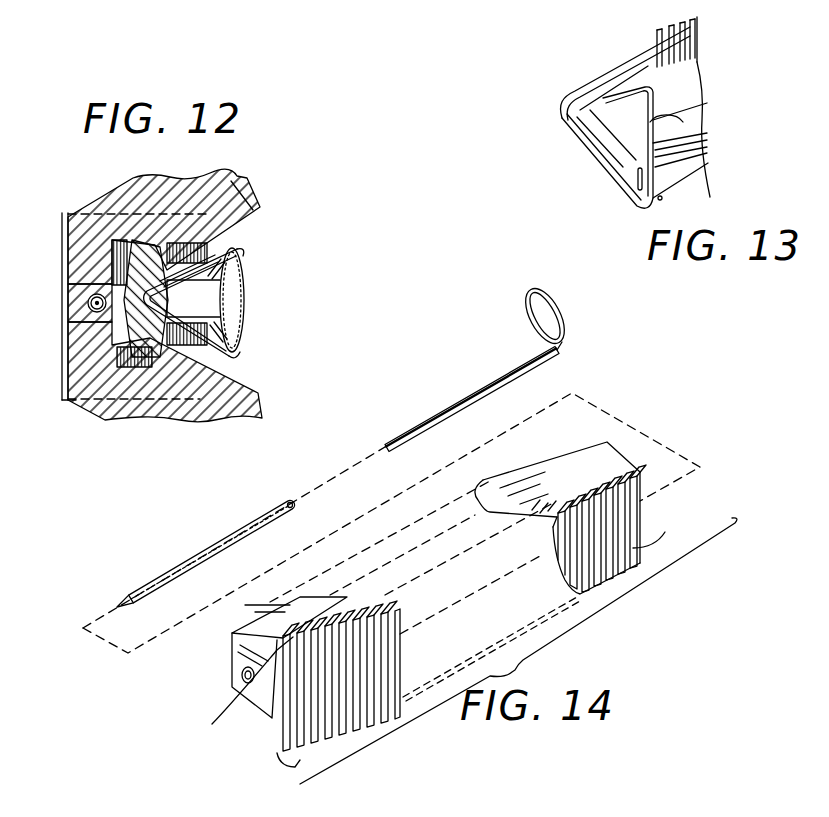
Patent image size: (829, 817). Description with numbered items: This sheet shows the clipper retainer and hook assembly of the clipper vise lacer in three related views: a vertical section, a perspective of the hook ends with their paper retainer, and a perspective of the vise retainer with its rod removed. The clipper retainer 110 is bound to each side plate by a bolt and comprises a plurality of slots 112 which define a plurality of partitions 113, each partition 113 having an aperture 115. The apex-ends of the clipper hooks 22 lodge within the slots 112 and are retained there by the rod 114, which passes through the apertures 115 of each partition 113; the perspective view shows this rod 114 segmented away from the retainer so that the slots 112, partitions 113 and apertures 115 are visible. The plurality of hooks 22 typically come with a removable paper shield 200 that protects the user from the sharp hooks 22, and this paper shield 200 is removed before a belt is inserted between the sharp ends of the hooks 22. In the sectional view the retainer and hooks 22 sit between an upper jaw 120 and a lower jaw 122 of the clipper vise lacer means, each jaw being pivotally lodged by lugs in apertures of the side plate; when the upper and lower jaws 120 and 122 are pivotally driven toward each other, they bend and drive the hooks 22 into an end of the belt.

In FIG. 12, the clipper hooks 22 is at (237, 250).
In FIG. 13, the clipper hooks 22 is at (683, 70).
In FIG. 12, the clipper retainer 110 is at (82, 310).
In FIG. 14, the clipper retainer 110 is at (547, 460).
In FIG. 14, the slots 112 is at (387, 720).
In FIG. 14, the partitions 113 is at (438, 622).
In FIG. 12, the rod 114 is at (150, 353).
In FIG. 14, the rod 114 is at (463, 403).
In FIG. 14, the aperture 115 is at (297, 767).
In FIG. 12, the upper jaw 120 is at (225, 203).
In FIG. 12, the lower jaw 122 is at (210, 395).
In FIG. 12, the paper shield 200 is at (246, 322).
In FIG. 13, the paper shield 200 is at (632, 93).